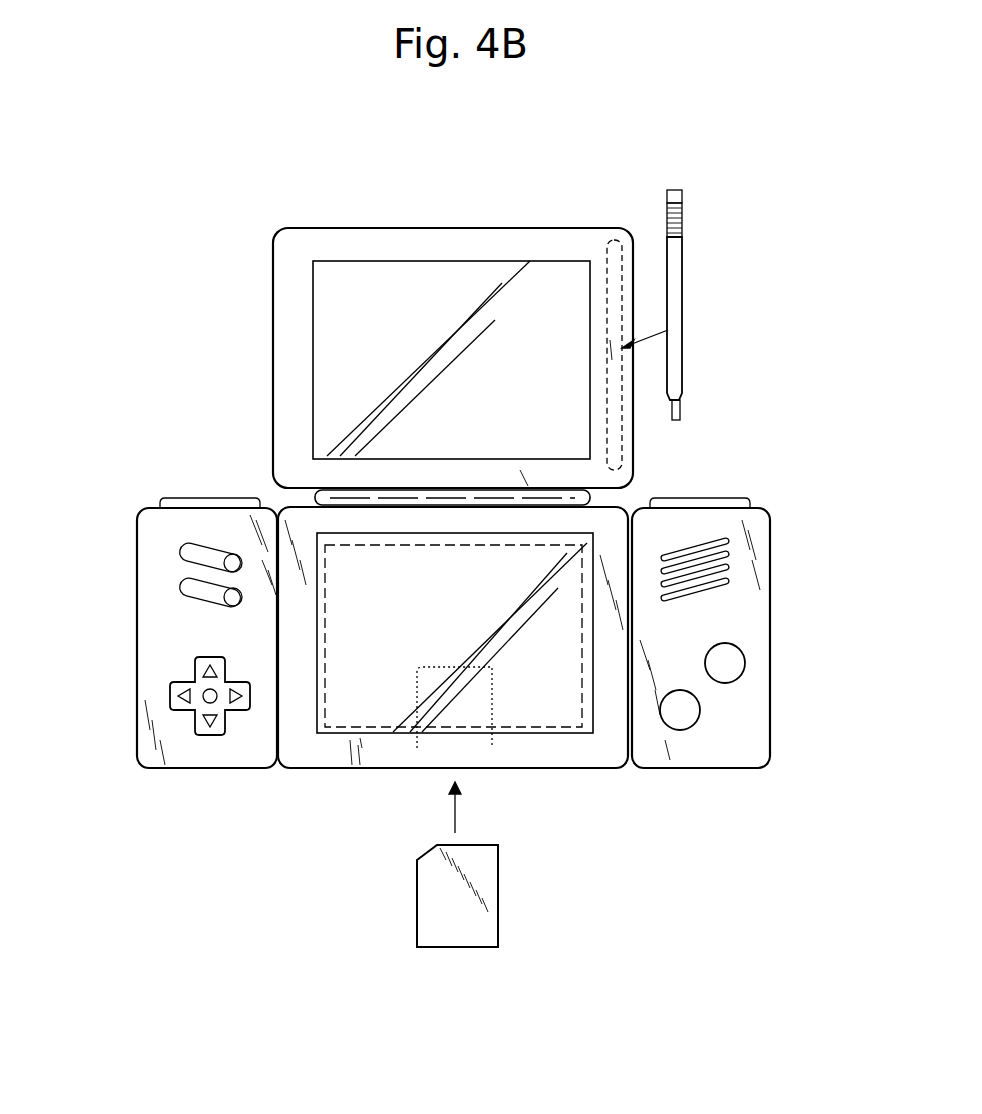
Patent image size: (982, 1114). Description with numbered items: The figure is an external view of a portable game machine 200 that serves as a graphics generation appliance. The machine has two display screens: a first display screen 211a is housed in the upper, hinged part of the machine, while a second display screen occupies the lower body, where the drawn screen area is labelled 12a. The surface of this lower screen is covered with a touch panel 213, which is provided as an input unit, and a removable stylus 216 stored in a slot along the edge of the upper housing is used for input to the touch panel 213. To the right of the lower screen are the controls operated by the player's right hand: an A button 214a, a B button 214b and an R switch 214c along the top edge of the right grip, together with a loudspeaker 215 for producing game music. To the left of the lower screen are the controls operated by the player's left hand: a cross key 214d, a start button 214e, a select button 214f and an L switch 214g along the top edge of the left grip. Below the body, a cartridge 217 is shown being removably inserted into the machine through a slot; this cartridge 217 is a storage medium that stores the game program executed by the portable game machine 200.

The portable game machine 200 is at (566, 189).
The first display screen 211a is at (487, 397).
The stylus 216 is at (683, 288).
The L switch 214g is at (213, 498).
The R switch 214c is at (705, 498).
The start button 214e is at (181, 546).
The select button 214f is at (181, 586).
The cross key 214d is at (170, 696).
The loudspeaker 215 is at (738, 560).
The A button 214a is at (746, 662).
The B button 214b is at (700, 712).
The lower display screen (touch panel) 12a is at (478, 630).
The touch panel 213 is at (558, 735).
The cartridge 217 is at (498, 905).